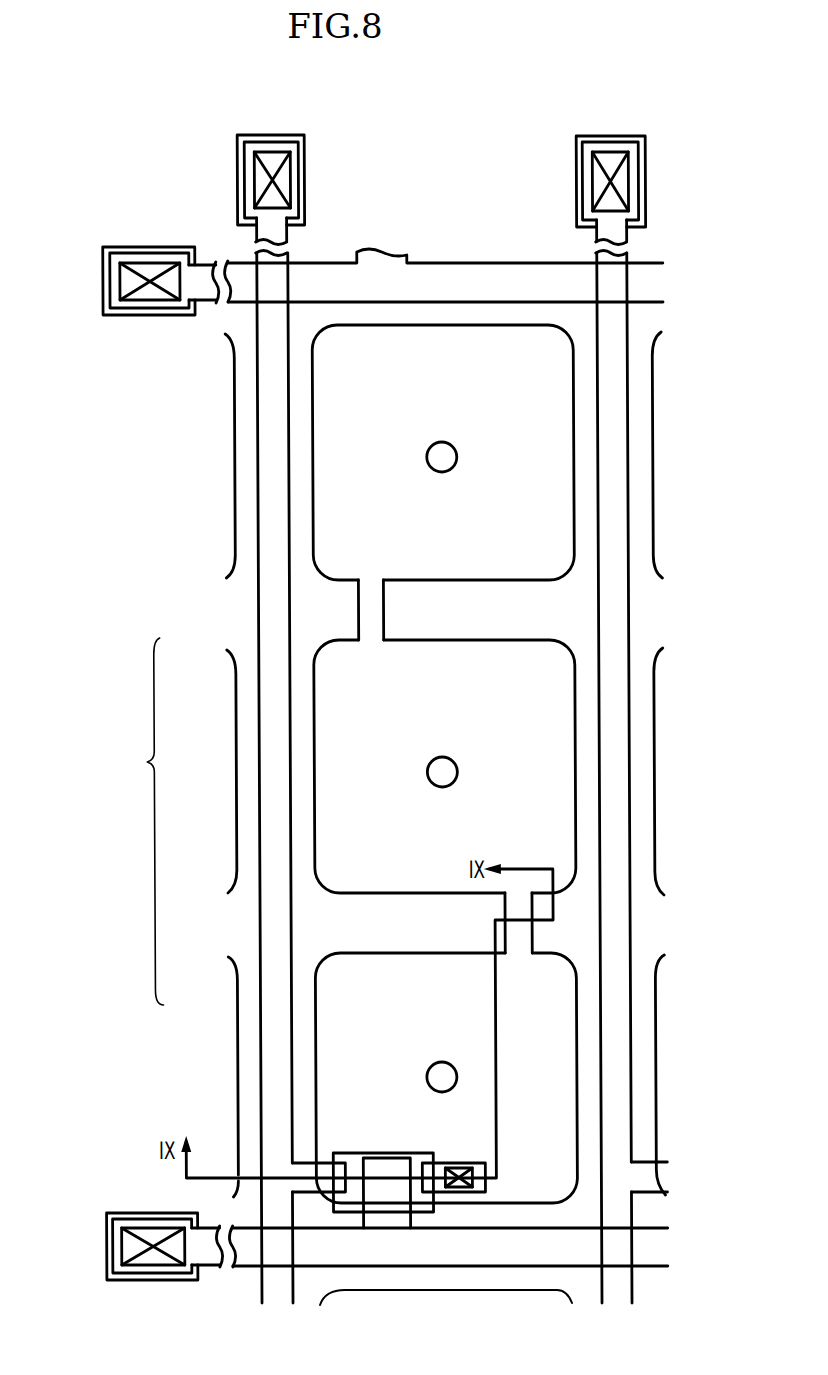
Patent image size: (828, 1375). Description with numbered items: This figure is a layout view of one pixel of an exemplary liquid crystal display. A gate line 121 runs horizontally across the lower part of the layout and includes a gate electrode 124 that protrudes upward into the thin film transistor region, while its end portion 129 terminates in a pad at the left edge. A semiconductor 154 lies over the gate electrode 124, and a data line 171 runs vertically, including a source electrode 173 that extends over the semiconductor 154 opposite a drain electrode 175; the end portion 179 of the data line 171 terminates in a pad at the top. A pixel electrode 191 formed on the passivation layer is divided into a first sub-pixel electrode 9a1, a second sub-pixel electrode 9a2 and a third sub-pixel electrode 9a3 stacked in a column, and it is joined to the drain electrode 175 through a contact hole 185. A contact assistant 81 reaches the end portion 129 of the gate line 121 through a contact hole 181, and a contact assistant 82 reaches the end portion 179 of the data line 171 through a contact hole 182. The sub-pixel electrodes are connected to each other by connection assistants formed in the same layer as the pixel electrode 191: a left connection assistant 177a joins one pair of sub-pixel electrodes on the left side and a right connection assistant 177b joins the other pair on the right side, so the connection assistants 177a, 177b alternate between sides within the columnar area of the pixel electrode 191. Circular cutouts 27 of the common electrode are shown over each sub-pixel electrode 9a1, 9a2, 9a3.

The circular cutout 27 is at (457, 450).
The contact assistant 81 is at (103, 310).
The contact assistant 82 is at (238, 145).
The gate line 121 is at (552, 1228).
The gate electrode 124 is at (356, 1197).
The end portion of gate line 129 is at (110, 283).
The semiconductor 154 is at (379, 1213).
The data line 171 is at (258, 1060).
The source electrode 173 is at (324, 1158).
The drain electrode 175 is at (473, 1193).
The left connection assistant 177a is at (357, 602).
The right connection assistant 177b is at (529, 937).
The end portion of data line 179 is at (285, 142).
The contact hole 181 is at (120, 266).
The contact hole 182 is at (257, 150).
The contact hole 185 is at (455, 1188).
The pixel electrode 191 is at (137, 821).
The first sub-pixel electrode 9a1 is at (312, 1002).
The second sub-pixel electrode 9a2 is at (312, 752).
The third sub-pixel electrode 9a3 is at (425, 580).